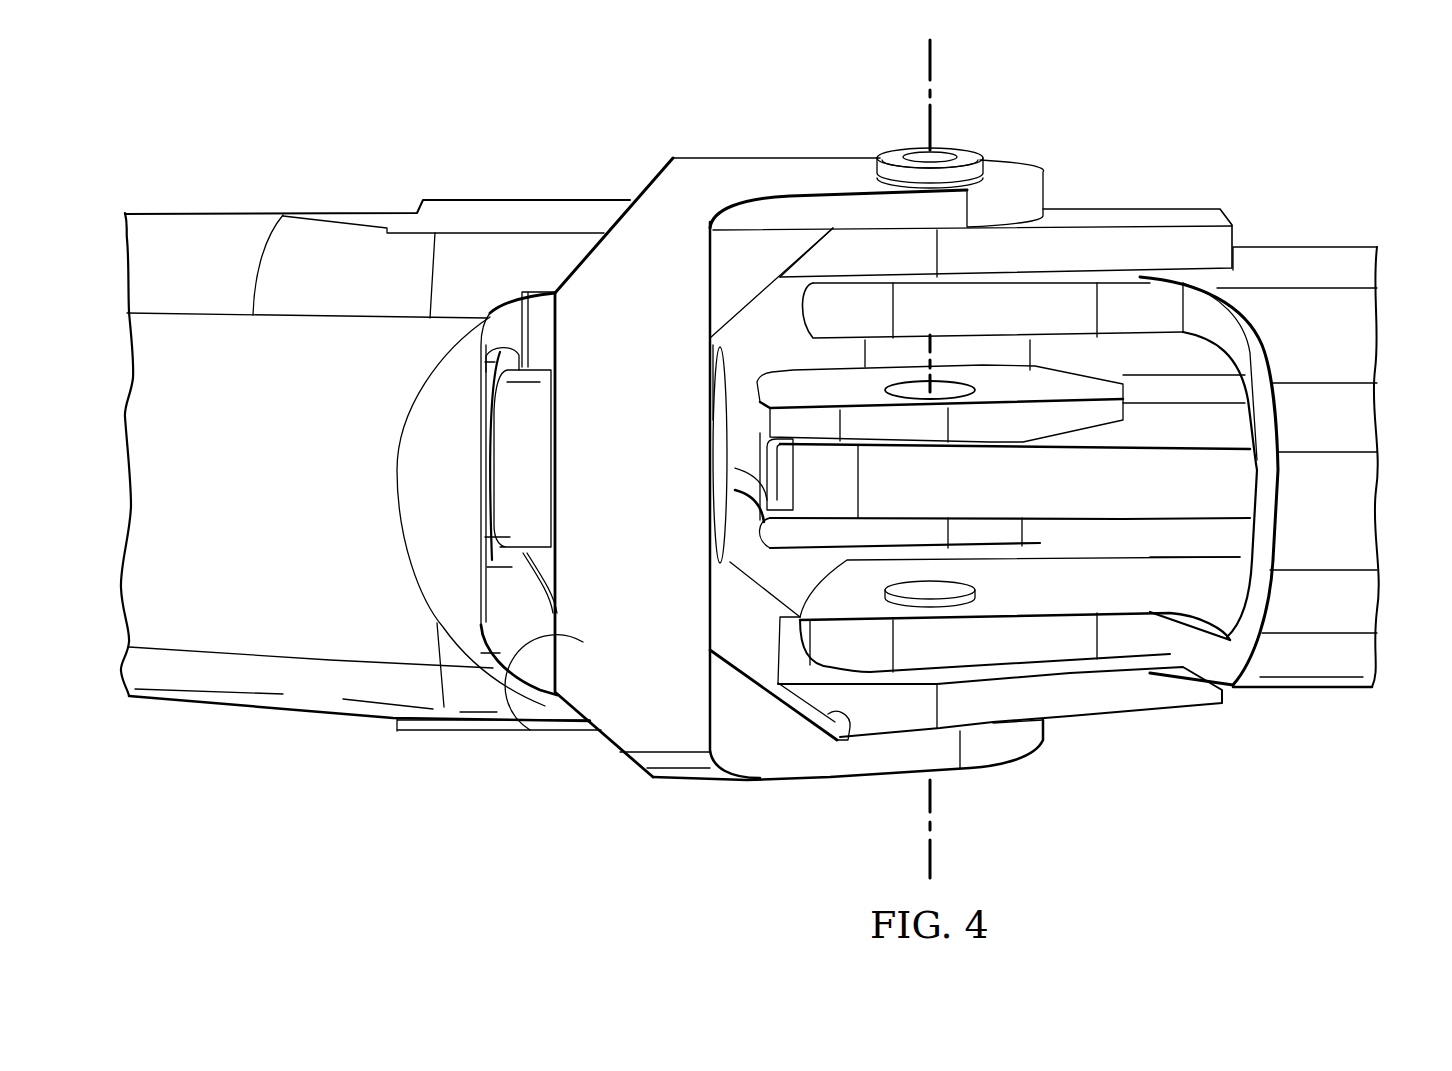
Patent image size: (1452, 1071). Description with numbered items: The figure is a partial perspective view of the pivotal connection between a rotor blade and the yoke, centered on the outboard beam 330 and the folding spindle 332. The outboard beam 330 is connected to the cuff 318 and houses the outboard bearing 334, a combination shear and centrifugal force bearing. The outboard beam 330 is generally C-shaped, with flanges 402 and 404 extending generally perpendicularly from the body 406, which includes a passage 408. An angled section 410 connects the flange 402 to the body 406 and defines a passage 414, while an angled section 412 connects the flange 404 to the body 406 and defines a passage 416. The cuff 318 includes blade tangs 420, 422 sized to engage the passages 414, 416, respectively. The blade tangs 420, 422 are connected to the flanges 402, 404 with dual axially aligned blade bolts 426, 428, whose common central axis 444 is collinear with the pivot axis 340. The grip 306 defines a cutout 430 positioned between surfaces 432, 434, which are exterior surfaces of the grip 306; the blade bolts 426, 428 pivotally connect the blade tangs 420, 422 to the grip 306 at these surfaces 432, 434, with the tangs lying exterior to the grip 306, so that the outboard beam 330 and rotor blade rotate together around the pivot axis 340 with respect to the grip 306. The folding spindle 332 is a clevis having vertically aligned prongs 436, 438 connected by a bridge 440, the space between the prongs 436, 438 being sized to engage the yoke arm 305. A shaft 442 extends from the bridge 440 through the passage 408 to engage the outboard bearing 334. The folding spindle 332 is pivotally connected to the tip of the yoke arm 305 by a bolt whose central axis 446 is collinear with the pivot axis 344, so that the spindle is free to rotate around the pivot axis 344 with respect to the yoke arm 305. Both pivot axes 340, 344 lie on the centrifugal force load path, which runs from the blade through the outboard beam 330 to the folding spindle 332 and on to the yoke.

The cuff 318 is at (205, 258).
The grip 306 is at (1352, 330).
The yoke arm 305 is at (1193, 497).
The outboard beam 330 is at (642, 187).
The folding spindle 332 is at (1005, 385).
The outboard bearing 334 is at (528, 420).
The pivot axis 340 is at (928, 60).
The pivot axis 344 is at (962, 318).
The flange 402 is at (782, 168).
The flange 404 is at (893, 765).
The body 406 is at (530, 645).
The passage 408 is at (735, 380).
The angled section 410 is at (750, 262).
The angled section 412 is at (752, 742).
The passage 414 is at (818, 250).
The passage 416 is at (850, 718).
The blade tang 420 is at (1128, 215).
The blade tang 422 is at (1100, 700).
The blade bolt 426 is at (965, 155).
The blade bolt 428 is at (975, 596).
The cutout 430 is at (1240, 522).
The surface 432 is at (1288, 258).
The surface 434 is at (1288, 690).
The prong 436 is at (1065, 383).
The prong 438 is at (1067, 530).
The bridge 440 is at (767, 478).
The shaft 442 is at (733, 442).
The central axis 444 is at (886, 457).
The central axis 446 is at (992, 290).